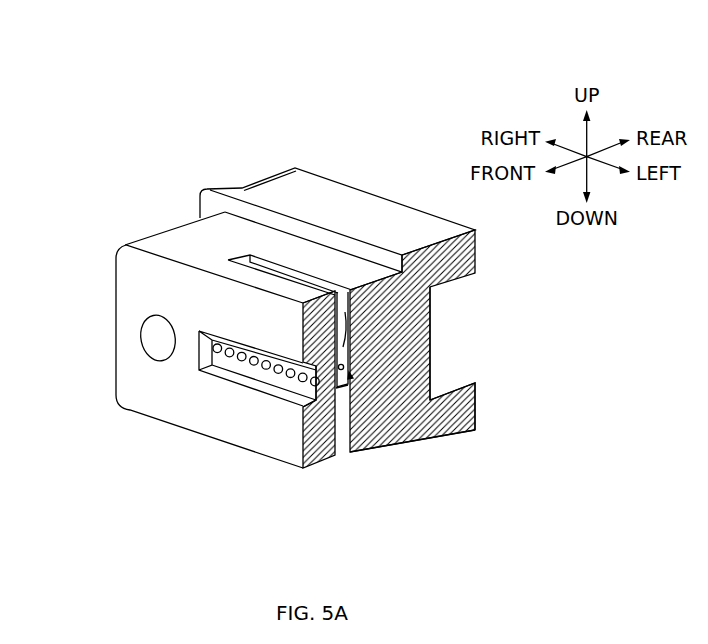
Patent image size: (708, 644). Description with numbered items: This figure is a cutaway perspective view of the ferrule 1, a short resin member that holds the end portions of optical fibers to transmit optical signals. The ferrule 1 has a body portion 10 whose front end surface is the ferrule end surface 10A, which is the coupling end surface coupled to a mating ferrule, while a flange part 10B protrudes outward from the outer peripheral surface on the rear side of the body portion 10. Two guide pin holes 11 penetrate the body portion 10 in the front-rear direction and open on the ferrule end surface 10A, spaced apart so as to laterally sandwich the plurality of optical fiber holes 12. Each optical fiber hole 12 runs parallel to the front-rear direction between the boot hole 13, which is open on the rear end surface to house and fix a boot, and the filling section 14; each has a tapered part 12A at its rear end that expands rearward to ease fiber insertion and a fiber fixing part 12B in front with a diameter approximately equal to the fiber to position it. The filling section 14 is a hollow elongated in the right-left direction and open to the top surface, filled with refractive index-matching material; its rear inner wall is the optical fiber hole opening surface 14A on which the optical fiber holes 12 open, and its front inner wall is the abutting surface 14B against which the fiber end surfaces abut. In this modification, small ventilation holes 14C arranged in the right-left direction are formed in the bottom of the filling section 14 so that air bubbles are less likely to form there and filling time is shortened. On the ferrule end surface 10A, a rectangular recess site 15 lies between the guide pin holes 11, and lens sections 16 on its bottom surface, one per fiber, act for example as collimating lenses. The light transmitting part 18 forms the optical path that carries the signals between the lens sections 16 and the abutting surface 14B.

The ferrule 1 is at (158, 112).
The body portion 10 is at (187, 235).
The ferrule end surface 10A is at (140, 285).
The flange part 10B is at (215, 188).
The guide pin hole 11 is at (158, 340).
The optical fiber hole 12 is at (545, 458).
The tapered part 12A is at (462, 427).
The fiber fixing part 12B is at (440, 447).
The boot hole 13 is at (480, 323).
The filling section 14 is at (342, 369).
The optical fiber hole opening surface 14A is at (327, 278).
The abutting surface 14B is at (340, 390).
The ventilation hole 14C is at (349, 466).
The recess site 15 is at (238, 385).
The lens section 16 is at (279, 374).
The light transmitting part 18 is at (317, 403).